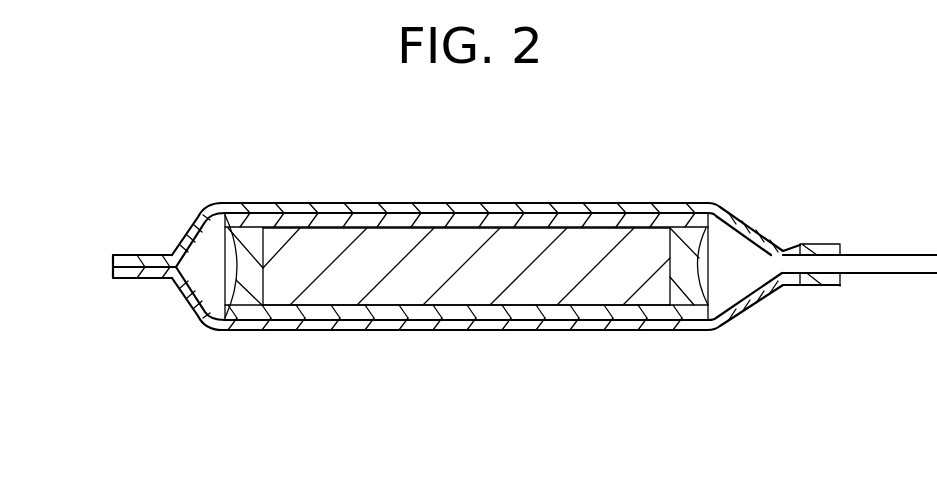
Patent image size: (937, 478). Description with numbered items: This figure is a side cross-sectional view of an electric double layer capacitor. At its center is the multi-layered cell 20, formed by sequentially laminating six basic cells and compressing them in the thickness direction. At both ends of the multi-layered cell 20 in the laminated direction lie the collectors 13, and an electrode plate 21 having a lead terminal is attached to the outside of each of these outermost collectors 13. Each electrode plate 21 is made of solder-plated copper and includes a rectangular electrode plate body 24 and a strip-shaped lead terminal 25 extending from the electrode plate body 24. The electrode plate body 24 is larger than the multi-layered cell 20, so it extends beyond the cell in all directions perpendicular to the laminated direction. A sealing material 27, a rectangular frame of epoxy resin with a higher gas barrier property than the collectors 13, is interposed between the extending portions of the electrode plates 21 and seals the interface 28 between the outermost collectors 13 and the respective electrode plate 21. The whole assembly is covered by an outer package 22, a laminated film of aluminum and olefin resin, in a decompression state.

The collector 13 is at (430, 224).
The multi-layered cell 20 is at (523, 226).
The electrode plate having a lead terminal 21 is at (343, 204).
The outer package 22 is at (733, 201).
The electrode plate body 24 is at (605, 220).
The lead terminal 25 is at (893, 268).
The sealing material 27 is at (683, 296).
The interface 28 is at (662, 226).